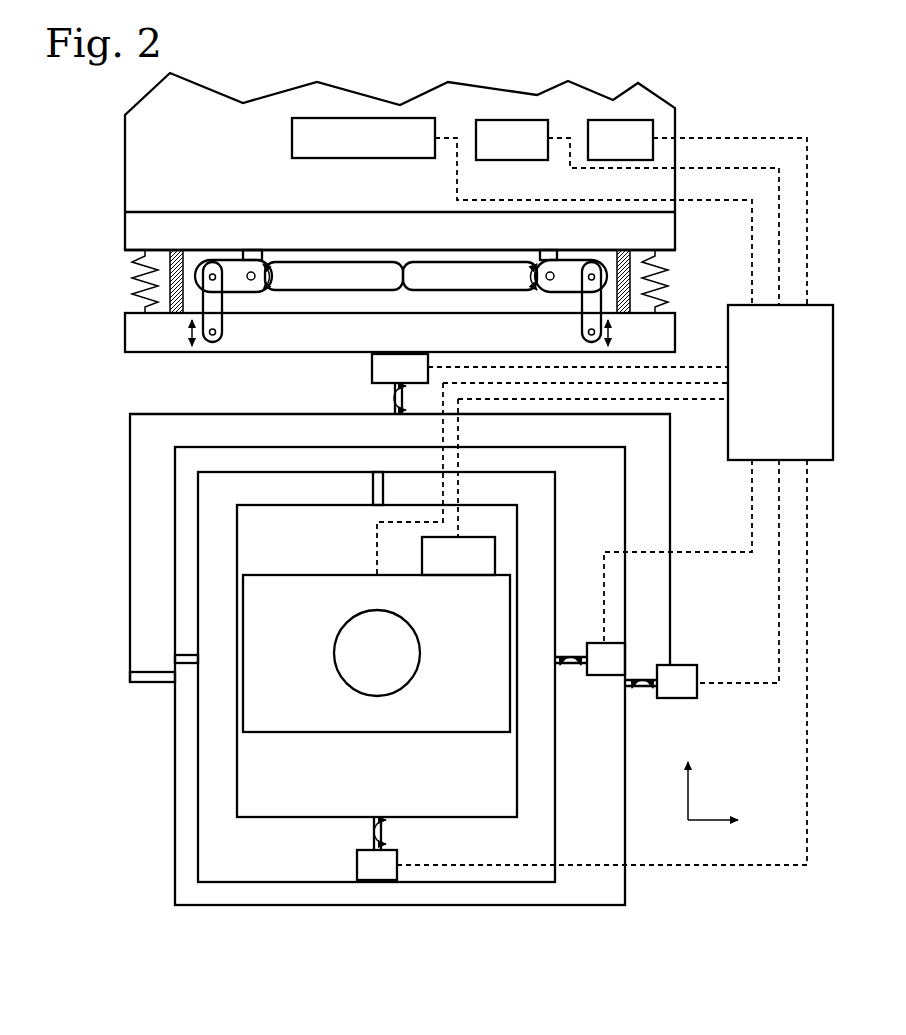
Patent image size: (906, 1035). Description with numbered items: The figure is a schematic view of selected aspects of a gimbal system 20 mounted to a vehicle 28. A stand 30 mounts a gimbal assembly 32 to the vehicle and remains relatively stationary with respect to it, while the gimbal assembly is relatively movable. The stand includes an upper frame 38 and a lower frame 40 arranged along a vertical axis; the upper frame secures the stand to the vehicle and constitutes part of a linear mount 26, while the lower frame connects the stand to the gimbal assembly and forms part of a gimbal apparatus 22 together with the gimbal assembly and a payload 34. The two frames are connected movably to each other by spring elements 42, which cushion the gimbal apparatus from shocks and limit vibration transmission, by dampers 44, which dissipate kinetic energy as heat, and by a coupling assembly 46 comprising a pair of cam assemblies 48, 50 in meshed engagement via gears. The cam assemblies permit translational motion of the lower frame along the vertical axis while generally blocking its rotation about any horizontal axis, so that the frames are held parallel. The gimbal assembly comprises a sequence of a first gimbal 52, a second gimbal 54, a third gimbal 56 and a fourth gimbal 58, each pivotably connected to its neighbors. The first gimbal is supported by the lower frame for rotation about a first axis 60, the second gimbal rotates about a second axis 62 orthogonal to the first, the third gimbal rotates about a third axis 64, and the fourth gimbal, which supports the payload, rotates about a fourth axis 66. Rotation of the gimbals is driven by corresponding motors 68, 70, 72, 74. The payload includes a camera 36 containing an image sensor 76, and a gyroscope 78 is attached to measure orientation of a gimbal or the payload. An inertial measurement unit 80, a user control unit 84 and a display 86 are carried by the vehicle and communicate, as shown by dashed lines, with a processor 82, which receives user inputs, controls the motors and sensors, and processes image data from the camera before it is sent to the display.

The gimbal system 20 is at (728, 96).
The gimbal apparatus 22 is at (82, 362).
The linear mount 26 is at (124, 237).
The vehicle 28 is at (124, 128).
The stand 30 is at (112, 325).
The gimbal assembly 32 is at (107, 460).
The payload 34 is at (340, 574).
The camera 36 is at (279, 664).
The upper frame 38 is at (385, 242).
The lower frame 40 is at (385, 344).
The spring element 42 is at (130, 286).
The damper 44 is at (183, 263).
The coupling assembly 46 is at (360, 300).
The cam assembly 48 is at (232, 303).
The cam assembly 50 is at (562, 305).
The first gimbal 52 is at (262, 412).
The second gimbal 54 is at (306, 447).
The third gimbal 56 is at (258, 472).
The fourth gimbal 58 is at (307, 505).
The first axis 60 is at (380, 400).
The second axis 62 is at (641, 665).
The third axis 64 is at (568, 640).
The fourth axis 66 is at (350, 830).
The motor 68 is at (385, 382).
The motor 70 is at (664, 695).
The motor 72 is at (590, 672).
The motor 74 is at (364, 878).
The image sensor 76 is at (465, 688).
The gyroscope 78 is at (445, 568).
The inertial measurement unit 80 is at (351, 150).
The processor 82 is at (767, 394).
The user control unit 84 is at (499, 152).
The display 86 is at (607, 152).